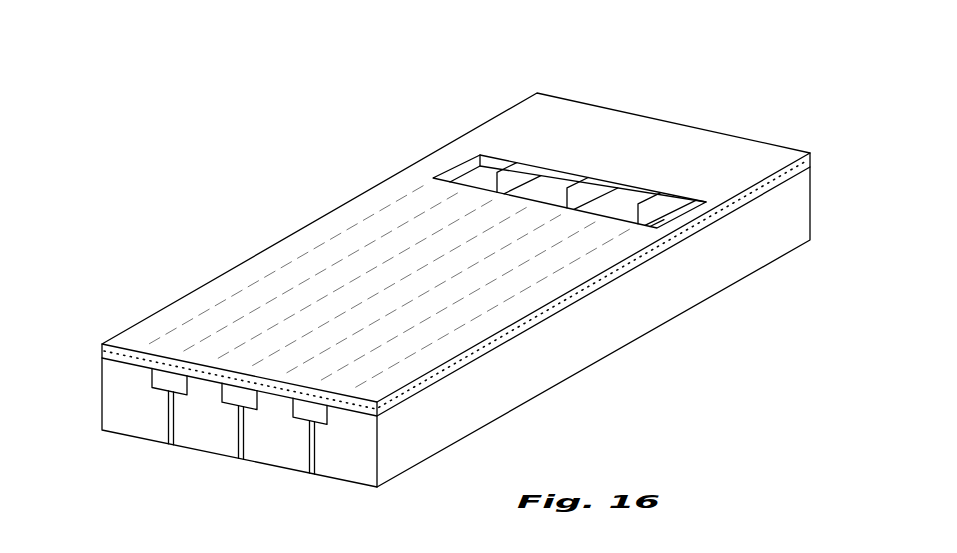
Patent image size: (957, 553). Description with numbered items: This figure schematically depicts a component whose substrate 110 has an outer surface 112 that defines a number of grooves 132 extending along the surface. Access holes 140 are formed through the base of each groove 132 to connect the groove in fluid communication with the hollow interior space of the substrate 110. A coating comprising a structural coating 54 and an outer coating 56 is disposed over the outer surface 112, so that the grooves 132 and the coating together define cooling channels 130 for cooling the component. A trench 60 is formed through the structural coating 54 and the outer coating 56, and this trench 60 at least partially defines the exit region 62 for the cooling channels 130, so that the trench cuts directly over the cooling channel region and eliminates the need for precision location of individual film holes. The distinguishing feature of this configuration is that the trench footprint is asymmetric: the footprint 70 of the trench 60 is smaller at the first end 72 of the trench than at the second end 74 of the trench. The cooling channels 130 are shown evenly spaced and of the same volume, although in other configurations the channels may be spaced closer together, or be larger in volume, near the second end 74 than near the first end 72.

The structural coating 54 is at (391, 213).
The outer coating 56 is at (627, 125).
The trench 60 is at (485, 155).
The exit region 62 is at (648, 207).
The footprint 70 is at (684, 200).
The first end 72 is at (436, 177).
The second end 74 is at (668, 213).
The substrate 110 is at (745, 252).
The outer surface 112 is at (394, 415).
The cooling channel 130 is at (184, 441).
The groove 132 is at (178, 452).
The access hole 140 is at (308, 464).